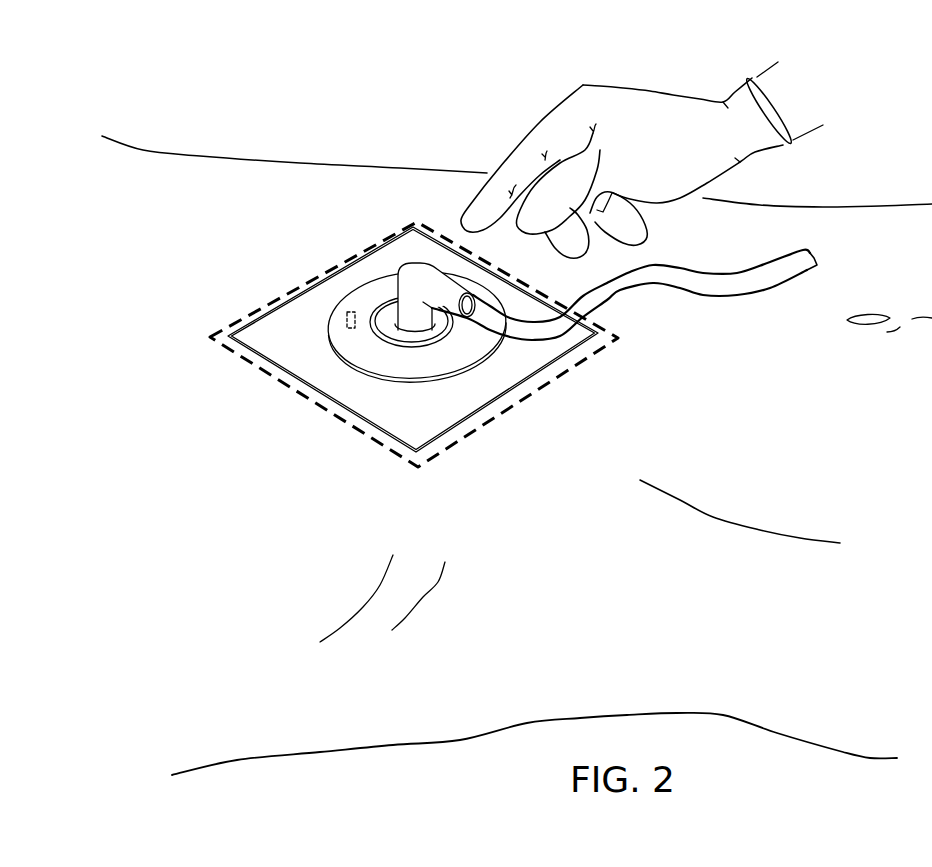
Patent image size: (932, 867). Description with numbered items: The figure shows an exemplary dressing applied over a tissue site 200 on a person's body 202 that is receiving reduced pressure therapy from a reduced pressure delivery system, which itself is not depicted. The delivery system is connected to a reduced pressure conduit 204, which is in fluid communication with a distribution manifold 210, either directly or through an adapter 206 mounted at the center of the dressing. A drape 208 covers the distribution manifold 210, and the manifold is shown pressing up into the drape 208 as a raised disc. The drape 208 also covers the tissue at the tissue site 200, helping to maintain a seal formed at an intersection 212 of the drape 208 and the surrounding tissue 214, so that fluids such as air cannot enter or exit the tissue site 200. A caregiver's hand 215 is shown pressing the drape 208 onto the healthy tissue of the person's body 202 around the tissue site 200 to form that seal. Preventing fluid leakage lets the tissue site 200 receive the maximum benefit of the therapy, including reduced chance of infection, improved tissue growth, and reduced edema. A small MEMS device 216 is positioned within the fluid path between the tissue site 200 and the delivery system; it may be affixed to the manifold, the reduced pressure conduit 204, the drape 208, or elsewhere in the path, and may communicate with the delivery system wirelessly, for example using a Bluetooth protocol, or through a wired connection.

The tissue site 200 is at (211, 225).
The person's body 202 is at (420, 167).
The reduced pressure conduit 204 is at (748, 297).
The adapter 206 is at (413, 262).
The drape 208 is at (316, 298).
The distribution manifold 210 is at (343, 353).
The intersection 212 is at (530, 388).
The surrounding tissue 214 is at (265, 308).
The hand 215 is at (583, 84).
The MEMS device 216 is at (343, 307).